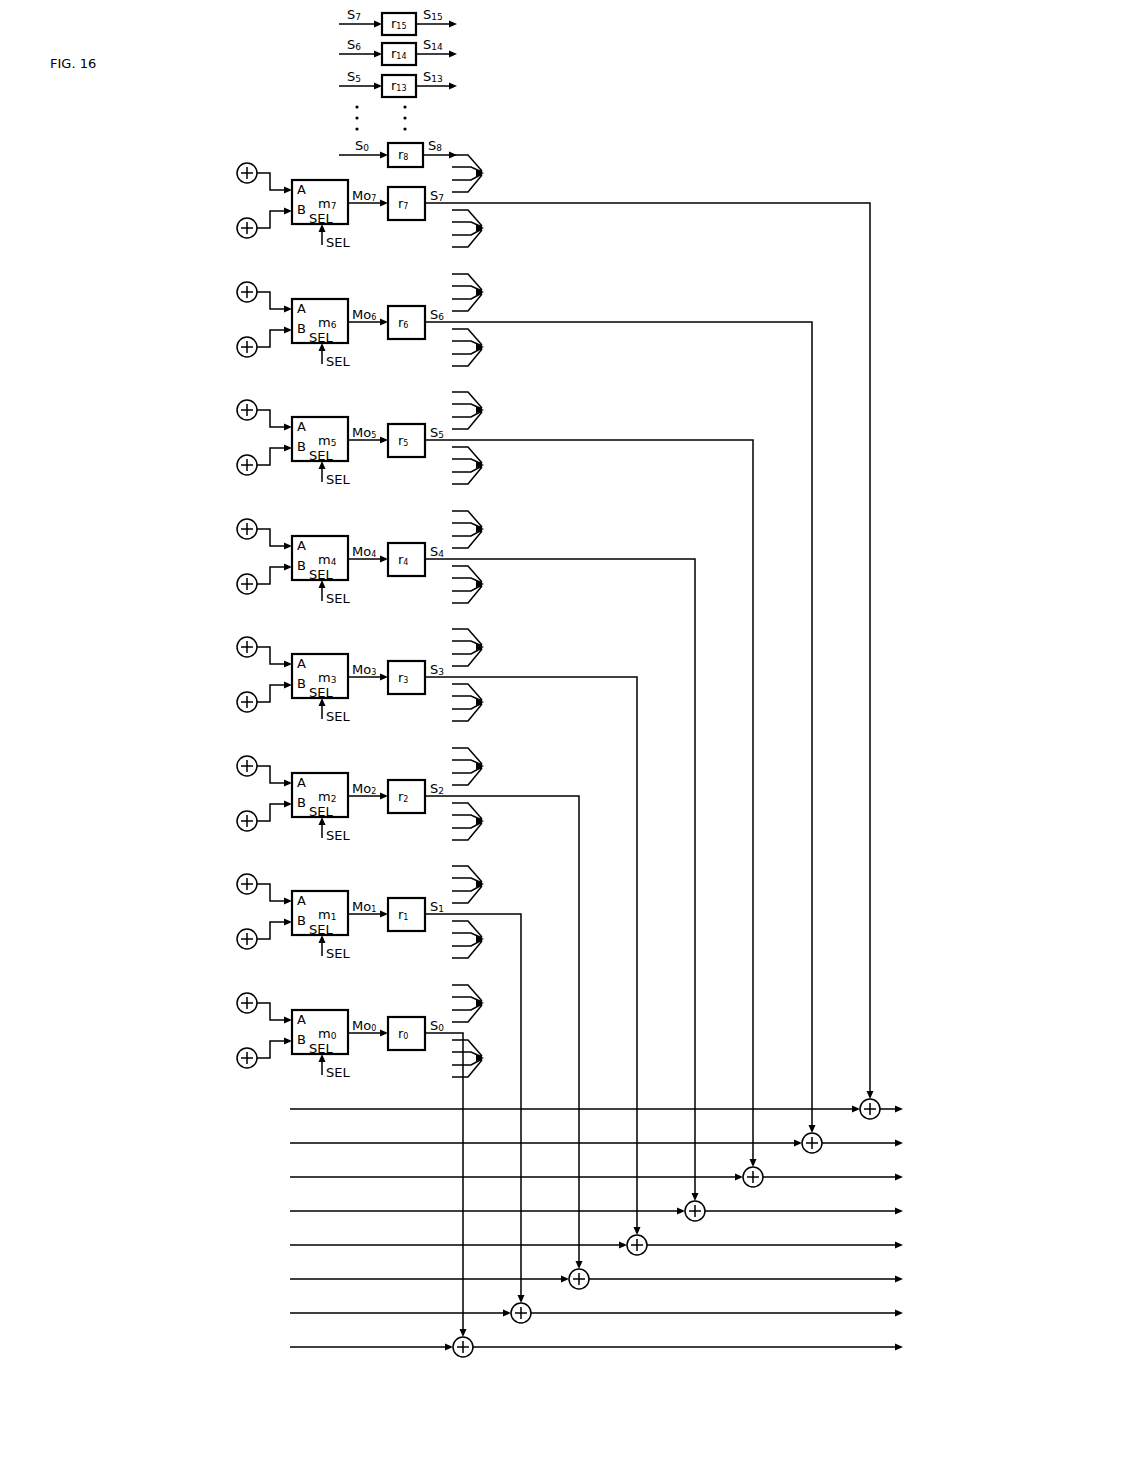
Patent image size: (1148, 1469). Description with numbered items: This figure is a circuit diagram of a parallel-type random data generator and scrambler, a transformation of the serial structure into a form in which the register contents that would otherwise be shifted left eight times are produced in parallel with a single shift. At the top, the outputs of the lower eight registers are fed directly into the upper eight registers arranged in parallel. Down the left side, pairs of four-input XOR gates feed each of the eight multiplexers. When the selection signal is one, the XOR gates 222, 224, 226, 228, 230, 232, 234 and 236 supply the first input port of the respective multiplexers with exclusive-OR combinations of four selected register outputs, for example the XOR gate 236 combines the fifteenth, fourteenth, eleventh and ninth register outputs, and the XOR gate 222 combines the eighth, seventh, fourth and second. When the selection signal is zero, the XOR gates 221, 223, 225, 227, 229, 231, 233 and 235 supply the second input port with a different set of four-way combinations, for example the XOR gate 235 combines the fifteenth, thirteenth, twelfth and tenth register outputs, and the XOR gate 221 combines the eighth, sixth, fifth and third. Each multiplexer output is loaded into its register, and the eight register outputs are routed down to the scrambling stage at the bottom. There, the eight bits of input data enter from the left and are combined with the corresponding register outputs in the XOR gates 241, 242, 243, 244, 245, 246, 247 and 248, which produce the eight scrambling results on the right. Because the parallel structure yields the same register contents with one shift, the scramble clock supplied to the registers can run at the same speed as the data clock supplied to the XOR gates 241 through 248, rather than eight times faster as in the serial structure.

The XOR gate 221 is at (327, 1059).
The XOR gate 222 is at (327, 1004).
The XOR gate 223 is at (327, 940).
The XOR gate 224 is at (327, 885).
The XOR gate 225 is at (327, 822).
The XOR gate 226 is at (327, 767).
The XOR gate 227 is at (327, 703).
The XOR gate 228 is at (327, 648).
The XOR gate 229 is at (327, 585).
The XOR gate 230 is at (327, 530).
The XOR gate 231 is at (327, 466).
The XOR gate 232 is at (327, 411).
The XOR gate 233 is at (327, 348).
The XOR gate 234 is at (327, 293).
The XOR gate 235 is at (327, 229).
The XOR gate 236 is at (327, 174).
The XOR gate 241 is at (600, 1339).
The XOR gate 242 is at (600, 1305).
The XOR gate 243 is at (600, 1271).
The XOR gate 244 is at (600, 1237).
The XOR gate 245 is at (600, 1203).
The XOR gate 246 is at (600, 1169).
The XOR gate 247 is at (600, 1135).
The XOR gate 248 is at (600, 1101).